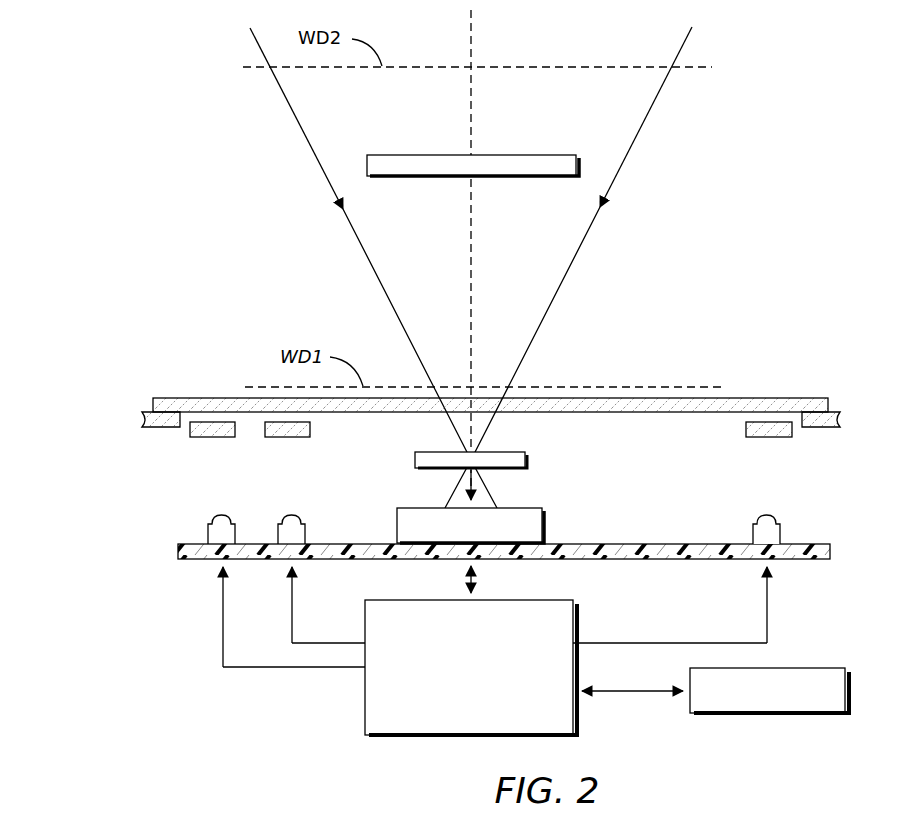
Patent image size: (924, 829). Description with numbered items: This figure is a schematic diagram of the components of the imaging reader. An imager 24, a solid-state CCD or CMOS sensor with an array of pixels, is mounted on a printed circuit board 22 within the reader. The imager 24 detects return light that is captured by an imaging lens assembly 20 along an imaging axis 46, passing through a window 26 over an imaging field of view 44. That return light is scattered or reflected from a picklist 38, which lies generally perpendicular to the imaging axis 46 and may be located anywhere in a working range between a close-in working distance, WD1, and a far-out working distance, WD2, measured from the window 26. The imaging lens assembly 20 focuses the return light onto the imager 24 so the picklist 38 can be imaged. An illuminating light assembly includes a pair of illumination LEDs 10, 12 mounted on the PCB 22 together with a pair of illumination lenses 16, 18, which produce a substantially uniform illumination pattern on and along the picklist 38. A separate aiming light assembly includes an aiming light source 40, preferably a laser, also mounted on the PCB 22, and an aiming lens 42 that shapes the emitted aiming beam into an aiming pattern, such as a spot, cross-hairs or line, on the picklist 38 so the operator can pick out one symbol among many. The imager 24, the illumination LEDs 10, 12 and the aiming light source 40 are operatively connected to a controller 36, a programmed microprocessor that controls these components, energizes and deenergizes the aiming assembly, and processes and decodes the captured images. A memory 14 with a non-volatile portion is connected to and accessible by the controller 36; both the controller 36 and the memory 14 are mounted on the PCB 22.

The illumination LED 10 is at (781, 534).
The illumination LED 12 is at (208, 530).
The memory 14 is at (830, 667).
The illumination lens 16 is at (745, 428).
The illumination lens 18 is at (192, 432).
The imaging lens assembly 20 is at (513, 473).
The printed circuit board 22 is at (832, 552).
The imager 24 is at (436, 507).
The window 26 is at (176, 397).
The controller 36 is at (365, 712).
The picklist 38 is at (416, 155).
The aiming light source 40 is at (305, 530).
The aiming lens 42 is at (265, 428).
The imaging field of view 44 is at (642, 130).
The imaging axis 46 is at (473, 30).